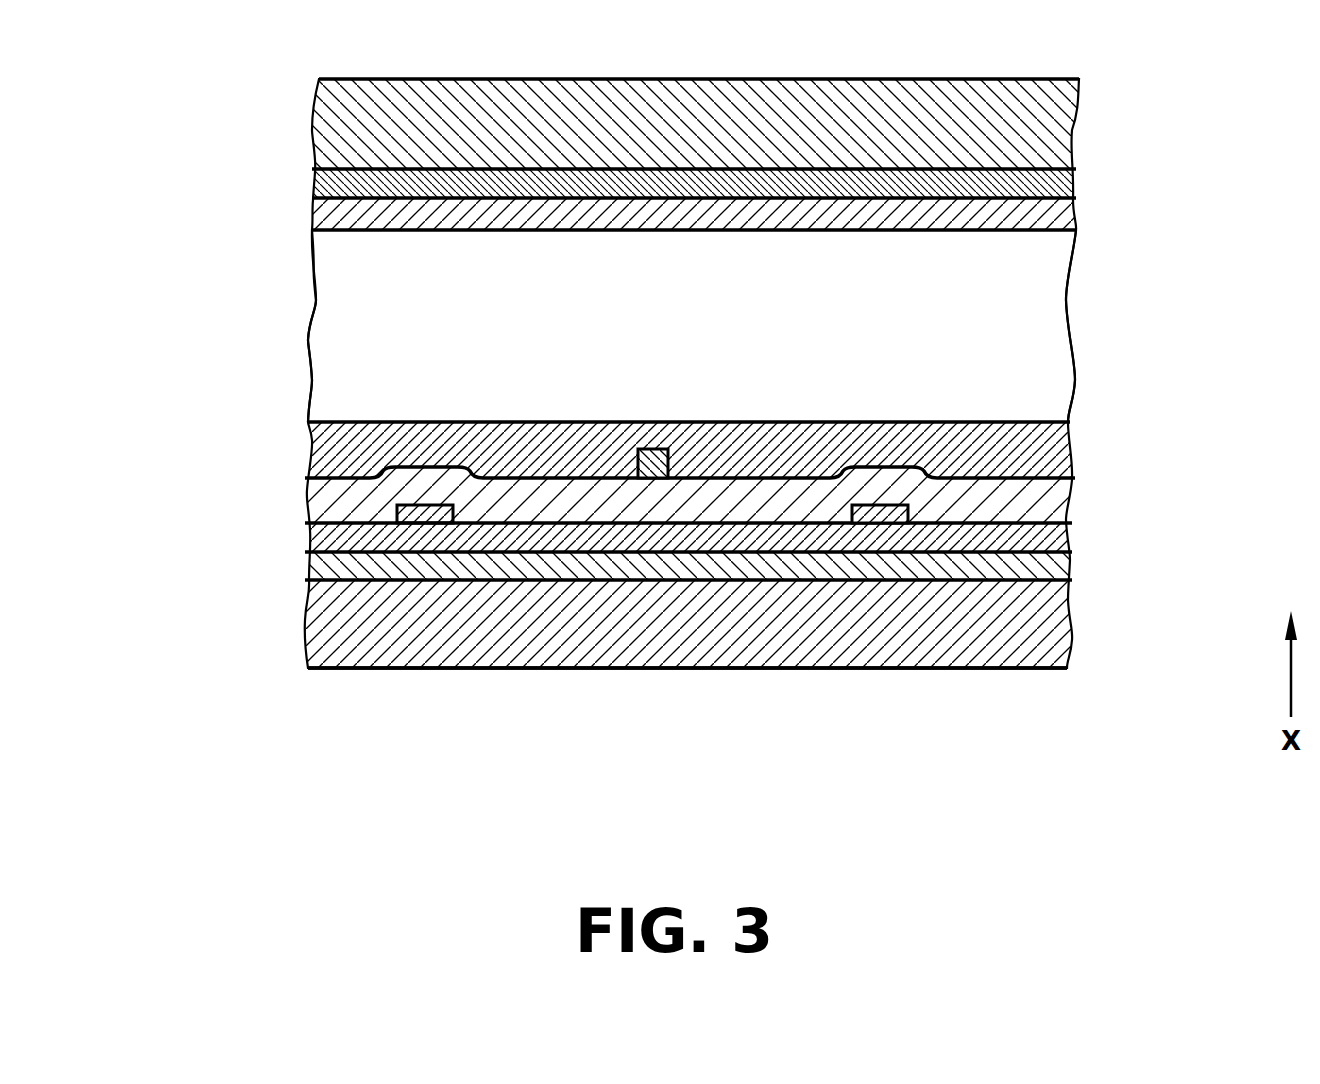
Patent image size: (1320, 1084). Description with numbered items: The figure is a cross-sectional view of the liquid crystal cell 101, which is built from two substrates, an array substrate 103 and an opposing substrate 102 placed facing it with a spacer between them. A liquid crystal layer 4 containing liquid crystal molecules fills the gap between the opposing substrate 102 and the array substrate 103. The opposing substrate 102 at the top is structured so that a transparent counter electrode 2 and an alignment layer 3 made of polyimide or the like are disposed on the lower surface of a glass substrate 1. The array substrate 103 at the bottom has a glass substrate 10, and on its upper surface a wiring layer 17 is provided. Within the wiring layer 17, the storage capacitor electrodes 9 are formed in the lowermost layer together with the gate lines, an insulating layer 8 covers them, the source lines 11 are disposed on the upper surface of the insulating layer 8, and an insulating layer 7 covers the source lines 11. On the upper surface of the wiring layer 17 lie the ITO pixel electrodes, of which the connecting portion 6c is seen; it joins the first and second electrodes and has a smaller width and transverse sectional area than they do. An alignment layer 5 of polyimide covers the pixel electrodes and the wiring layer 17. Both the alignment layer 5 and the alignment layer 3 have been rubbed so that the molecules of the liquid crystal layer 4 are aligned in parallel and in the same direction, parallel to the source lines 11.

The glass substrate 1 is at (1073, 130).
The transparent electrode (counter electrode) 2 is at (1073, 188).
The alignment layer 3 is at (1076, 213).
The liquid crystal layer 4 is at (1092, 230).
The alignment layer 5 is at (1068, 450).
The connecting portion 6c is at (652, 450).
The insulating layer 7 is at (1068, 498).
The insulating layer 8 is at (1068, 535).
The storage capacitor electrode 9 is at (1068, 565).
The glass substrate 10 is at (1067, 625).
The source line 11 is at (907, 510).
The wiring layer 17 is at (1207, 495).
The liquid crystal cell 101 is at (215, 668).
The opposing substrate 102 is at (292, 82).
The array substrate 103 is at (290, 423).